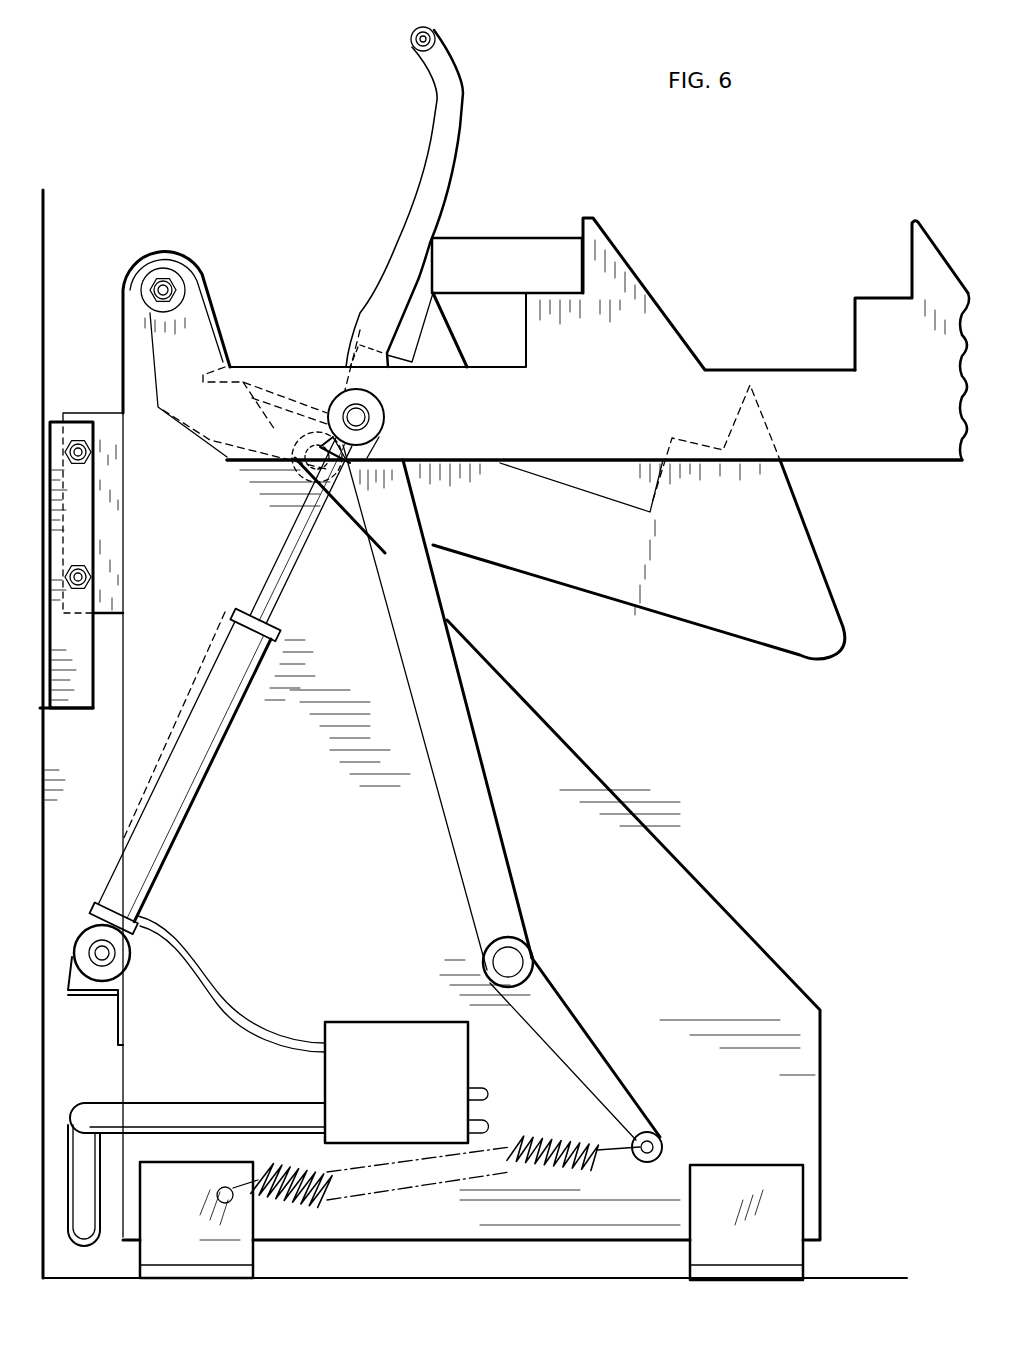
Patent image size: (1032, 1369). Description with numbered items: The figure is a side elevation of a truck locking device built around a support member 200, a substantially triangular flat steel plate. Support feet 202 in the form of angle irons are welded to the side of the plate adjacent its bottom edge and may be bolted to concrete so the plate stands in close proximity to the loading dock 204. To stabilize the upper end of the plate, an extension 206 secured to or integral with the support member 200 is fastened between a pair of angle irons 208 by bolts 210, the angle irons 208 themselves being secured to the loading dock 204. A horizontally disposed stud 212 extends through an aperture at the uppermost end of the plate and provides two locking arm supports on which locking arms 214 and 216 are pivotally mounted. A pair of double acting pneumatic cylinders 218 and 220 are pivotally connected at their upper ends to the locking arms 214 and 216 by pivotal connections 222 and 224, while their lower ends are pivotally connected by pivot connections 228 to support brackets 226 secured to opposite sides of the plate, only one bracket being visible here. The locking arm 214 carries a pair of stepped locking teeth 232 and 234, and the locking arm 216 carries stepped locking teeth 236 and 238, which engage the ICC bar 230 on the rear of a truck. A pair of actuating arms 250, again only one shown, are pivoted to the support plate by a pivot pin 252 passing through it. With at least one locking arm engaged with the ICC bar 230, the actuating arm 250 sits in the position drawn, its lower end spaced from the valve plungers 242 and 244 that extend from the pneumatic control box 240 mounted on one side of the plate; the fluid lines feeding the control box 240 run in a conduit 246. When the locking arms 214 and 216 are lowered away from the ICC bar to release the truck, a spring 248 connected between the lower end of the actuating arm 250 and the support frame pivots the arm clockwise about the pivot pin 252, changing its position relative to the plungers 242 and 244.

The support member 200 is at (620, 832).
The support feet 202 is at (233, 1247).
The loading dock 204 is at (43, 815).
The extension 206 is at (137, 535).
The angle irons 208 is at (78, 523).
The bolts 210 is at (86, 452).
The stud 212 is at (173, 283).
The locking arm 214 is at (870, 452).
The locking arm 216 is at (732, 615).
The double acting pneumatic cylinder 218 is at (236, 668).
The double acting pneumatic cylinder 220 is at (213, 650).
The pivotal connection 222 is at (370, 417).
The pivotal connection 224 is at (300, 452).
The support bracket 226 is at (74, 998).
The pivot connection 228 is at (110, 953).
The ICC bar 230 is at (531, 236).
The stepped locking tooth 232 is at (628, 297).
The stepped locking tooth 234 is at (912, 272).
The stepped locking tooth 236 is at (452, 347).
The stepped locking tooth 238 is at (670, 478).
The pneumatic control box 240 is at (388, 1040).
The valve plunger 242 is at (480, 1090).
The valve plunger 244 is at (478, 1123).
The conduit 246 is at (212, 1113).
The spring 248 is at (590, 1170).
The actuating arm 250 is at (453, 683).
The pivot pin 252 is at (510, 960).